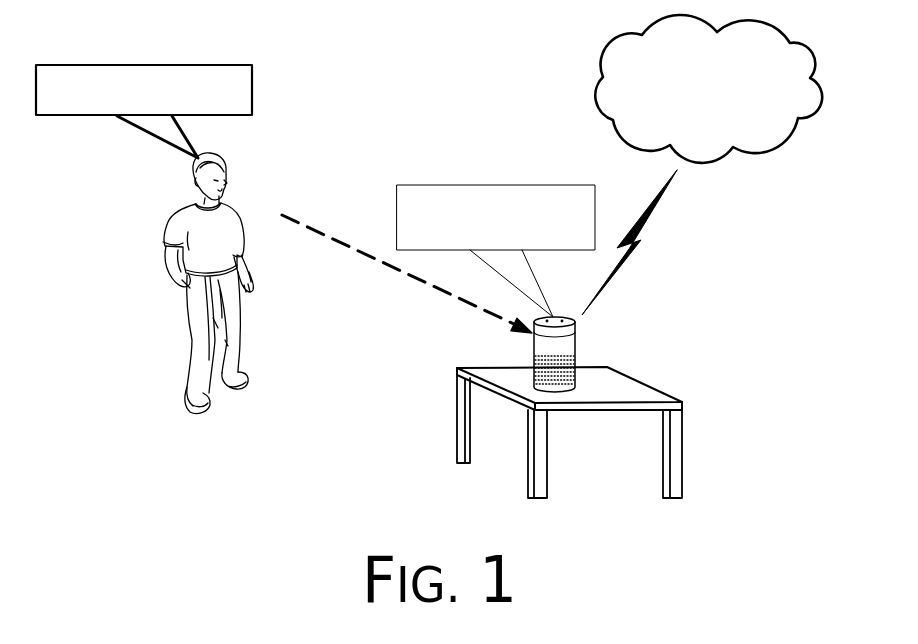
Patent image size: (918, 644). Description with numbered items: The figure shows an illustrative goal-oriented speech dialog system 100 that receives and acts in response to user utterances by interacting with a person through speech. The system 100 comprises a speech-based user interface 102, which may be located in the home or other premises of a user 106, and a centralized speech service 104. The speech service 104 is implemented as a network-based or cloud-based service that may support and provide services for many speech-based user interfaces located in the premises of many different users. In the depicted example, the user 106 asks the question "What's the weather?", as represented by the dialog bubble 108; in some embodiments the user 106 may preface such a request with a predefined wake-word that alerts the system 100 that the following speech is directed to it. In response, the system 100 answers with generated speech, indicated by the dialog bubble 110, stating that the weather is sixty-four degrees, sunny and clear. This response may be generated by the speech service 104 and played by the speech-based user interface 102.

The goal-oriented speech dialog system 100 is at (458, 56).
The speech-based user interface 102 is at (567, 345).
The speech service 104 is at (777, 40).
The user 106 is at (173, 215).
The dialog bubble 108 is at (243, 73).
The dialog bubble 110 is at (513, 191).